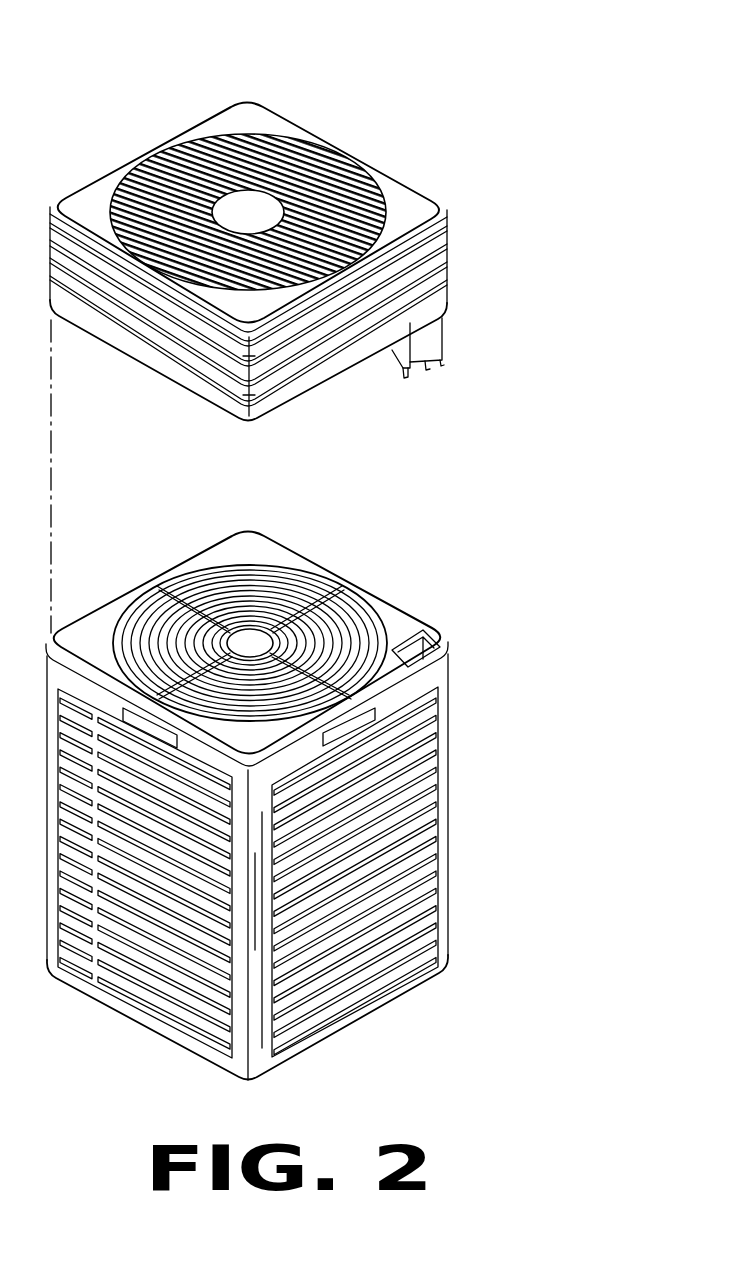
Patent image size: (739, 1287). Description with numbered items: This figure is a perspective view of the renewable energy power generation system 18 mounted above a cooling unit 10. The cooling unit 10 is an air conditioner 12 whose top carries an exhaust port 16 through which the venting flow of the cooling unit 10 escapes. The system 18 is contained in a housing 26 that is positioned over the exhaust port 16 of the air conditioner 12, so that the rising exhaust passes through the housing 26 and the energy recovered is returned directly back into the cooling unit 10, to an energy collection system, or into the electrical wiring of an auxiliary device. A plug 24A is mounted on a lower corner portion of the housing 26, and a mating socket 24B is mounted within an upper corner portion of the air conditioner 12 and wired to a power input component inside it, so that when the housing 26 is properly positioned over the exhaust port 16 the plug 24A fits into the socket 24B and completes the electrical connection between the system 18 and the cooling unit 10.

The cooling unit 10 is at (537, 768).
The air conditioner for cooling unit 12 is at (448, 878).
The exhaust port of cooling unit 16 is at (340, 573).
The renewable energy power generation system 18 is at (120, 140).
The connector bracket 24A is at (446, 334).
The connector receptacle 24B is at (438, 627).
The housing of system 26 is at (450, 248).